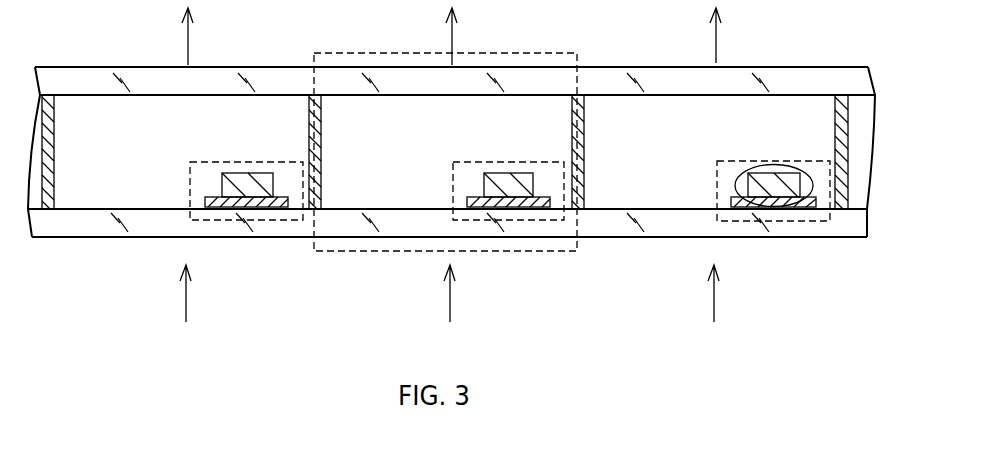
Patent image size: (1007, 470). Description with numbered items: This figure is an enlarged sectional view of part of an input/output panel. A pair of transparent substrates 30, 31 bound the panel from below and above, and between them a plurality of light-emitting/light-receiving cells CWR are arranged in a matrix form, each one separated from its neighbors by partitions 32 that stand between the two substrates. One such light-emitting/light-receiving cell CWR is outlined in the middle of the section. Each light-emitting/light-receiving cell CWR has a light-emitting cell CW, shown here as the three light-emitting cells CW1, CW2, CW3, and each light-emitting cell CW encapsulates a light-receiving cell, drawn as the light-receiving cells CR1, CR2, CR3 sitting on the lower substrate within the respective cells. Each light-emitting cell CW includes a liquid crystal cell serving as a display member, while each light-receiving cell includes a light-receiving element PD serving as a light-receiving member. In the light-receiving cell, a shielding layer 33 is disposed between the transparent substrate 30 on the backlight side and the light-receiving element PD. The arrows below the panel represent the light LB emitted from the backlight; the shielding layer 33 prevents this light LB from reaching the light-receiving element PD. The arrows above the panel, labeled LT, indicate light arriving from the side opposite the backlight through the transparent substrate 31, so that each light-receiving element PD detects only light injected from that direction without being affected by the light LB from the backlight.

The transparent substrate 30 is at (850, 223).
The transparent substrate 31 is at (606, 80).
The partition 32 is at (839, 95).
The shielding layer 33 is at (745, 207).
The light-receiving element PD is at (777, 207).
The light from top side LT is at (188, 44).
The light emitted from the backlight LB is at (186, 293).
The light-emitting cell CW is at (658, 187).
The light-emitting cell CW1 is at (123, 116).
The light-emitting cell CW2 is at (388, 116).
The light-emitting cell CW3 is at (653, 116).
The light-emitting/light-receiving cell CWR is at (368, 255).
The light-receiving cell CR1 is at (246, 160).
The light-receiving cell CR2 is at (507, 160).
The light-receiving cell CR3 is at (773, 230).